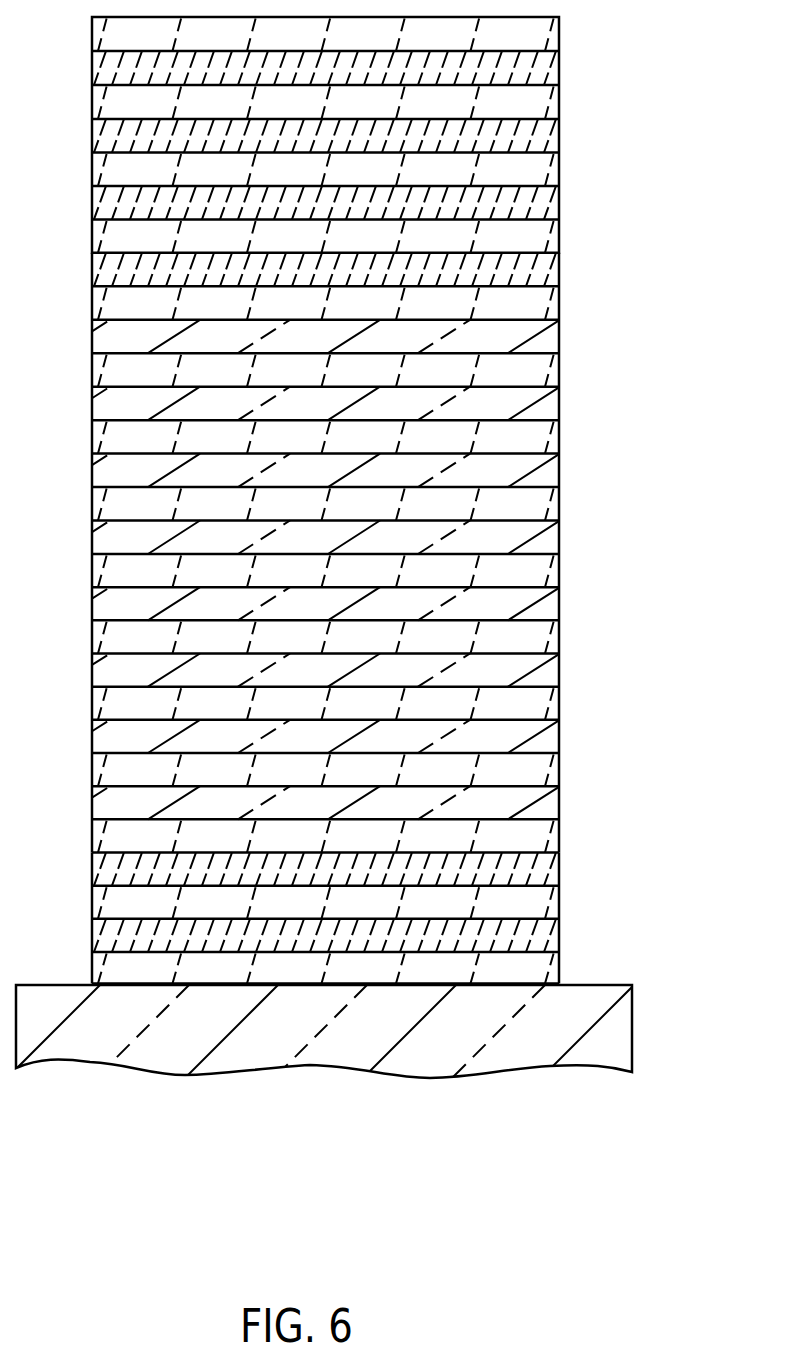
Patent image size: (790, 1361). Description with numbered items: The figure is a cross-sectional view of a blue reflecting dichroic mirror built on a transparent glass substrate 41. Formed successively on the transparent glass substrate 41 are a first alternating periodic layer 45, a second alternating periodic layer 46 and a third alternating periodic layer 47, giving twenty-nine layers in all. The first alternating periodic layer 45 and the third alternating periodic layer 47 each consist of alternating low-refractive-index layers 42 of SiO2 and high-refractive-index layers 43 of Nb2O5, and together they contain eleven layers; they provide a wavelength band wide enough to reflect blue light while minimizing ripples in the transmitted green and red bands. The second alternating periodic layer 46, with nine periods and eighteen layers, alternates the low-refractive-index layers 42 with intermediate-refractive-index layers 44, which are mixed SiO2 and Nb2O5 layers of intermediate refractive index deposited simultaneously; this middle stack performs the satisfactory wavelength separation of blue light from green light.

The transparent glass substrate 41 is at (613, 1032).
The low-refractive-index layer 42 is at (560, 31).
The high-refractive-index layer 43 is at (560, 65).
The intermediate-refractive-index layer 44 is at (560, 267).
The first alternating periodic layer 45 is at (645, 855).
The second alternating periodic layer 46 is at (645, 255).
The third alternating periodic layer 47 is at (645, 17).